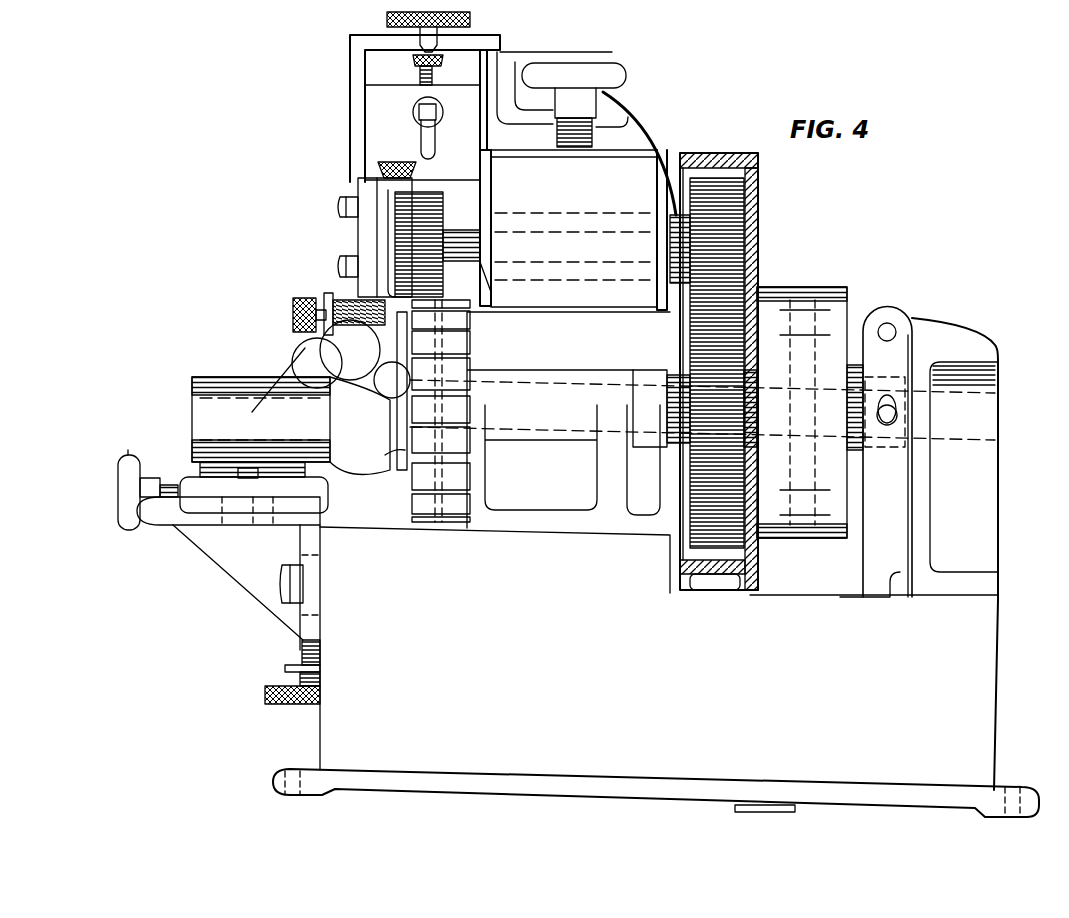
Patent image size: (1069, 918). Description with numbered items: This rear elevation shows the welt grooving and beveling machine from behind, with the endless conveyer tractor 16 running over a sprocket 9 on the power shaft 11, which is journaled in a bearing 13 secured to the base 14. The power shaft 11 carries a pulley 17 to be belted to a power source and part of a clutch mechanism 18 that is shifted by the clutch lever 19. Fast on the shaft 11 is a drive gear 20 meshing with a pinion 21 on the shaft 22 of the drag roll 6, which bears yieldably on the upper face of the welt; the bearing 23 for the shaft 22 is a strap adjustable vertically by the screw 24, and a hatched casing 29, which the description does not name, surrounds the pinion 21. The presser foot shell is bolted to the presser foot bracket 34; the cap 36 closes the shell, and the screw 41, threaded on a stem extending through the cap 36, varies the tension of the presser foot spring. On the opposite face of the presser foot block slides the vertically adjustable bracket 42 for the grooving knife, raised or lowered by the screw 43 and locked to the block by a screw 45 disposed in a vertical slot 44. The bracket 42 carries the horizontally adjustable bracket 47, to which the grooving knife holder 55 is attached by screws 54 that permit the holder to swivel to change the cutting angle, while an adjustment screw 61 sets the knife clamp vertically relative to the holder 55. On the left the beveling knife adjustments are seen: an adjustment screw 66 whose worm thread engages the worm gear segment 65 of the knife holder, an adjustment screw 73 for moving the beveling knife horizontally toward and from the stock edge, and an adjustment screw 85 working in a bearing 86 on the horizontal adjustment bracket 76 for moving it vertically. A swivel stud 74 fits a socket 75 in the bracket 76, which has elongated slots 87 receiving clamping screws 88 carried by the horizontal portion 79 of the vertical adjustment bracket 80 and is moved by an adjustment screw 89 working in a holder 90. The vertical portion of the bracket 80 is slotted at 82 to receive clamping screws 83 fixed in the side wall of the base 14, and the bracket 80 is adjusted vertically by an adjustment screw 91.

The cap 36 is at (368, 45).
The screw 41 is at (472, 22).
The screw 43 is at (415, 62).
The vertically adjustable bracket 42 is at (378, 118).
The screw 45 is at (415, 112).
The vertical slot 44 is at (420, 150).
The adjustment screw 61 is at (393, 165).
The grooving knife holder 55 is at (385, 198).
The screw 54 is at (340, 214).
The horizontally adjustable bracket 47 is at (366, 233).
The drag roll 6 is at (422, 212).
The bearing 23 is at (640, 178).
The shaft 22 is at (580, 222).
The screw 24 is at (628, 76).
The presser foot bracket 34 is at (620, 118).
The gear housing 29 is at (756, 246).
The pinion 21 is at (742, 202).
The drive gear 20 is at (690, 525).
The power shaft 11 is at (545, 410).
The bearing 13 is at (490, 470).
The sprocket 9 is at (455, 337).
The tractor 16 is at (472, 350).
The pulley 17 is at (820, 288).
The clutch mechanism 18 is at (890, 405).
The clutch lever 19 is at (940, 515).
The adjustment screw 66 is at (312, 306).
The worm gear segment 65 is at (325, 340).
The adjustment screw 85 is at (336, 354).
The bearing 86 is at (302, 362).
The adjustment screw 73 is at (392, 380).
The socket 75 is at (215, 382).
The swivel stud 74 is at (210, 400).
The clamping screw 88 is at (250, 470).
The horizontal adjustment bracket 76 is at (316, 494).
The elongated slot 87 is at (228, 513).
The adjustment screw 89 is at (118, 490).
The holder 90 is at (140, 478).
The upper horizontal portion 79 is at (205, 545).
The clamping screw 83 is at (282, 582).
The slot 82 is at (322, 598).
The vertical adjustment bracket 80 is at (305, 630).
The adjustment screw 91 is at (290, 702).
The base 14 is at (656, 725).